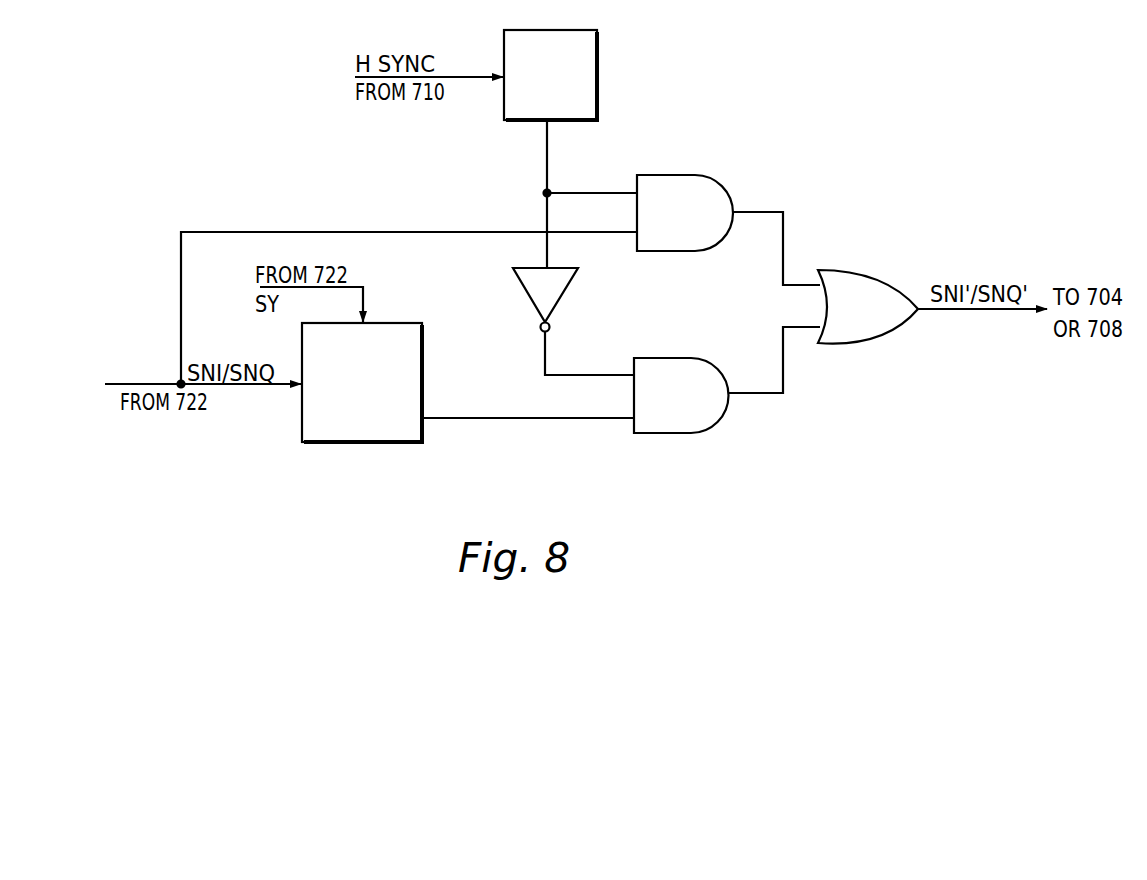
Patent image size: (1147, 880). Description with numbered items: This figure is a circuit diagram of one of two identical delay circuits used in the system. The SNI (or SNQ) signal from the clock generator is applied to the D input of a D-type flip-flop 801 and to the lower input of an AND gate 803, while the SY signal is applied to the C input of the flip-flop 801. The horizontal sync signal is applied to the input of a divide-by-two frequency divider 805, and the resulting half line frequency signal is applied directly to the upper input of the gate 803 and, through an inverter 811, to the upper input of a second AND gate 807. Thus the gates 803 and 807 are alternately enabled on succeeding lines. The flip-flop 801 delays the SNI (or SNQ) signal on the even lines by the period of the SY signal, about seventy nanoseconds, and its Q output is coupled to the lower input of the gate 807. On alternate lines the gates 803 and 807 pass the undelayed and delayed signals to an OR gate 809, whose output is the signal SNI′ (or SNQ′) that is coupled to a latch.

The D-type flip-flop 801 is at (362, 382).
The AND gate 803 is at (688, 253).
The divide-by-two frequency divider 805 is at (600, 80).
The AND gate 807 is at (686, 434).
The OR gate 809 is at (890, 334).
The inverter 811 is at (563, 304).